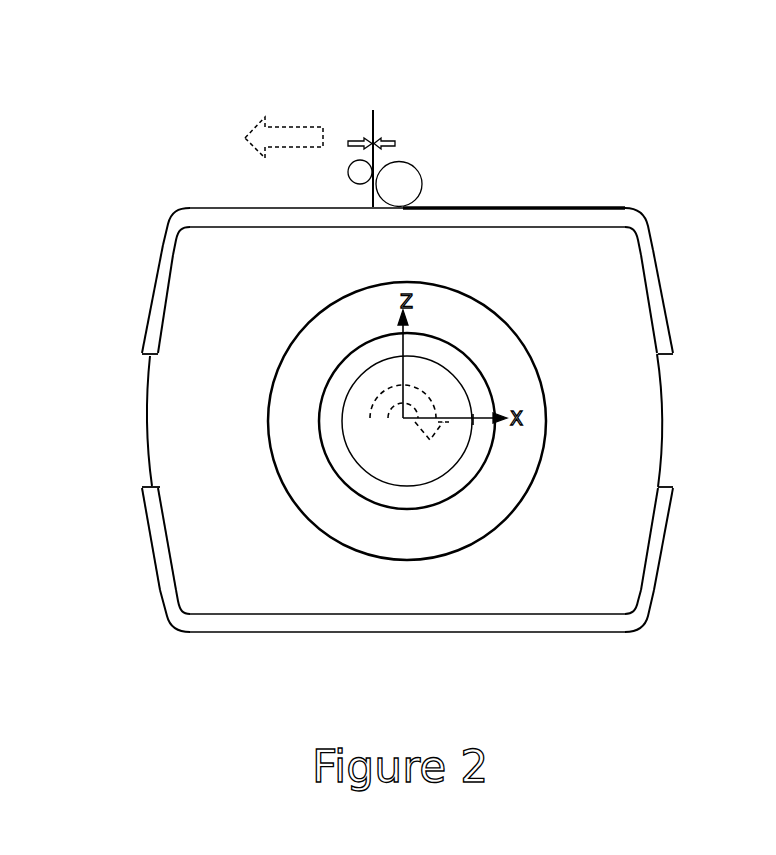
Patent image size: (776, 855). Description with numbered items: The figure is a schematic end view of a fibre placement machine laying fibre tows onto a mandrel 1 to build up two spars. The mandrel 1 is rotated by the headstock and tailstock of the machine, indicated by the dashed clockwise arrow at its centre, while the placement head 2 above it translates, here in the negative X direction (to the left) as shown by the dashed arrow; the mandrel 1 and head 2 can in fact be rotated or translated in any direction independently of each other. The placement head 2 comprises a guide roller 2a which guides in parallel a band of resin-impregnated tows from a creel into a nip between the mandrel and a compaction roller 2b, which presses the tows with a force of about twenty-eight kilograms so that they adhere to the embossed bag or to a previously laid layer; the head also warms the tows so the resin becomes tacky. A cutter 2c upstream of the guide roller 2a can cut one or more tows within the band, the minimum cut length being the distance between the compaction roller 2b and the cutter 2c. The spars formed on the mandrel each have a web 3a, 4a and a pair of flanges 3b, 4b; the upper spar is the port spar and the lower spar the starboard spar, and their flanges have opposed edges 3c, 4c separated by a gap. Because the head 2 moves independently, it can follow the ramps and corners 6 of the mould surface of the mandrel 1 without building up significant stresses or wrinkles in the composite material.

The mandrel 1 is at (399, 439).
The placement head 2 is at (369, 128).
The guide roller 2a is at (355, 175).
The compaction roller 2b is at (422, 177).
The cutter 2c is at (358, 140).
The web 3a is at (235, 213).
The flanges 3b is at (155, 295).
The opposed edge 3c is at (143, 357).
The web 4a is at (312, 622).
The flanges 4b is at (153, 557).
The opposed edge 4c is at (142, 485).
The corners 6 is at (182, 228).